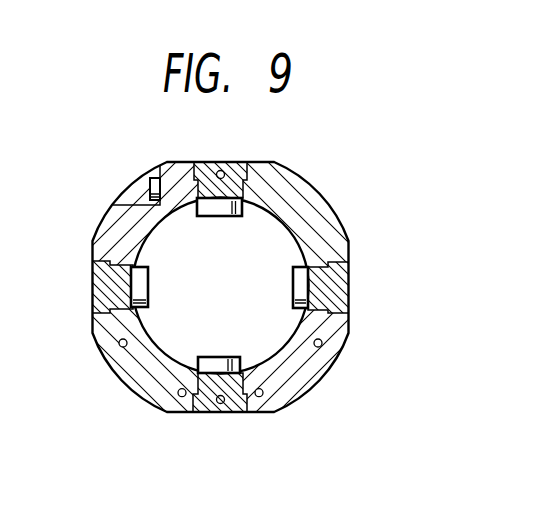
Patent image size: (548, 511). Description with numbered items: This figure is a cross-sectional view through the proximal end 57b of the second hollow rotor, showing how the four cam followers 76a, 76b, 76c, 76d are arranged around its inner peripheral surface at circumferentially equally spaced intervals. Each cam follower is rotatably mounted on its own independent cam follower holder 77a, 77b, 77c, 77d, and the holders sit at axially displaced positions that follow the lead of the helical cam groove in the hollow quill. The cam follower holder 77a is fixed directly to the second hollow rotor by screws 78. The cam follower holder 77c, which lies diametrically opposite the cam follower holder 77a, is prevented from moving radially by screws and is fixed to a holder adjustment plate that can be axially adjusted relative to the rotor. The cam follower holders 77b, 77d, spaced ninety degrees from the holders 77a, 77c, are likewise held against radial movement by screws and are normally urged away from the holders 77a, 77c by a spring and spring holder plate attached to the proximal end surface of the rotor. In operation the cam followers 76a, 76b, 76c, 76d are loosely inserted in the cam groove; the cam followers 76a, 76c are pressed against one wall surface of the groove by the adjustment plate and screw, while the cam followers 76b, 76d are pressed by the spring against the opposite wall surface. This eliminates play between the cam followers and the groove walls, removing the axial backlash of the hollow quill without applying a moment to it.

The proximal end of the second hollow rotor 57b is at (301, 183).
The cam follower holder 77a is at (238, 162).
The cam follower holder 77b is at (348, 264).
The cam follower holder 77c is at (220, 413).
The cam follower holder 77d is at (93, 284).
The cam follower 76a is at (232, 217).
The cam follower 76b is at (293, 285).
The cam follower 76c is at (216, 358).
The cam follower 76d is at (148, 285).
The screws 78 is at (150, 184).